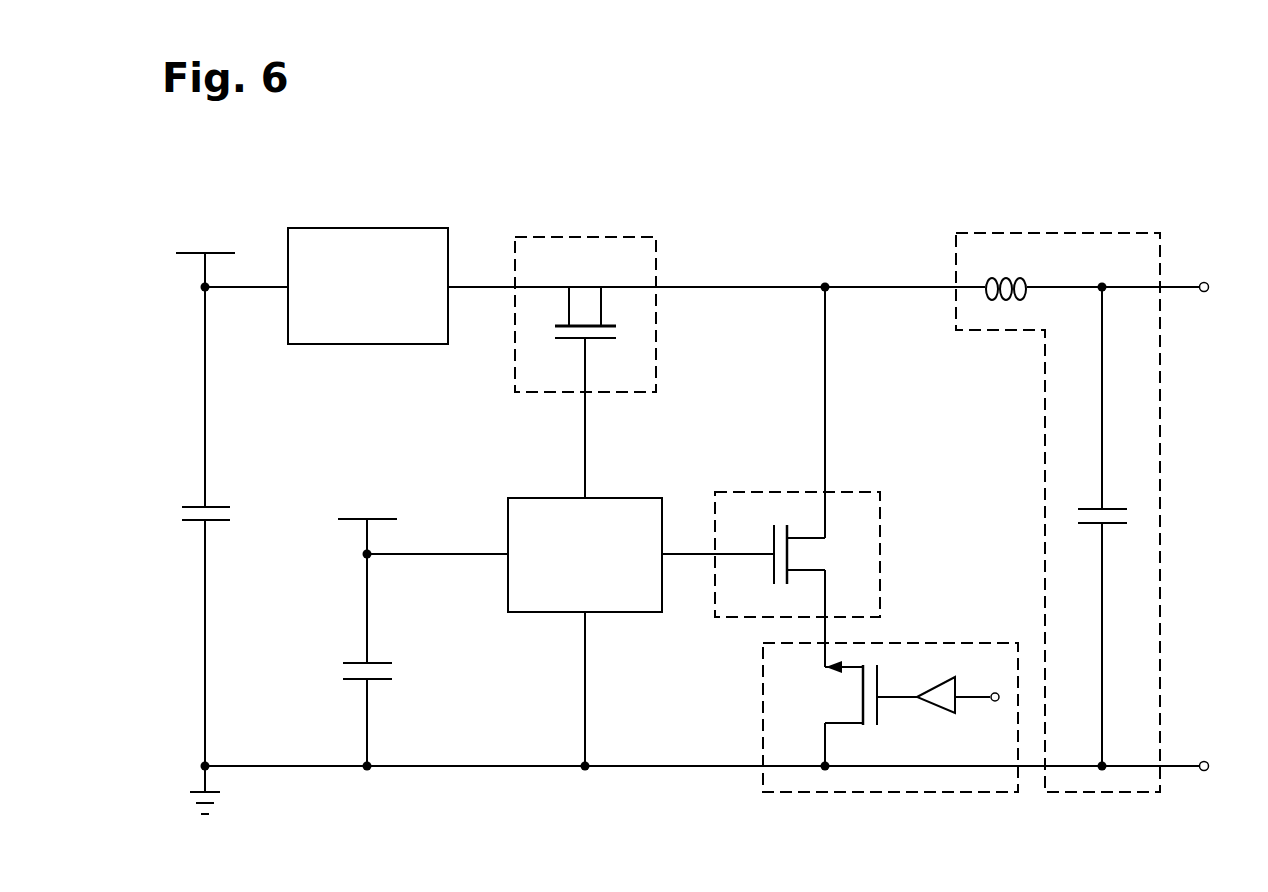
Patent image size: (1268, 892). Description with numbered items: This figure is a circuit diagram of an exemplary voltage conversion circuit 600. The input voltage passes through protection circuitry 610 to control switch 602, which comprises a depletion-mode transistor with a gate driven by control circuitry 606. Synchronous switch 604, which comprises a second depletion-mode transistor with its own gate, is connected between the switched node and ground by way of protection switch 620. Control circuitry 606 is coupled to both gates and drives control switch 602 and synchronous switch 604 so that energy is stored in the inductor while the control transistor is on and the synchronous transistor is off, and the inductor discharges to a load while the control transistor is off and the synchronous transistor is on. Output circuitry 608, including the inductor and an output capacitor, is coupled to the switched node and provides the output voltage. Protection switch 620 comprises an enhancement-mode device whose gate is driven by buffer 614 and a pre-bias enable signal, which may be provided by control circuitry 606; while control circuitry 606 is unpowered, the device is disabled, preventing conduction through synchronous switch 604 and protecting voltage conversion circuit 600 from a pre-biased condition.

The voltage conversion circuit 600 is at (712, 447).
The control switch 602 is at (670, 212).
The synchronous switch 604 is at (903, 466).
The control circuitry 606 is at (541, 516).
The output circuitry 608 is at (1052, 206).
The protection circuitry 610 is at (418, 246).
The buffer 614 is at (940, 702).
The protection switch 620 is at (890, 674).